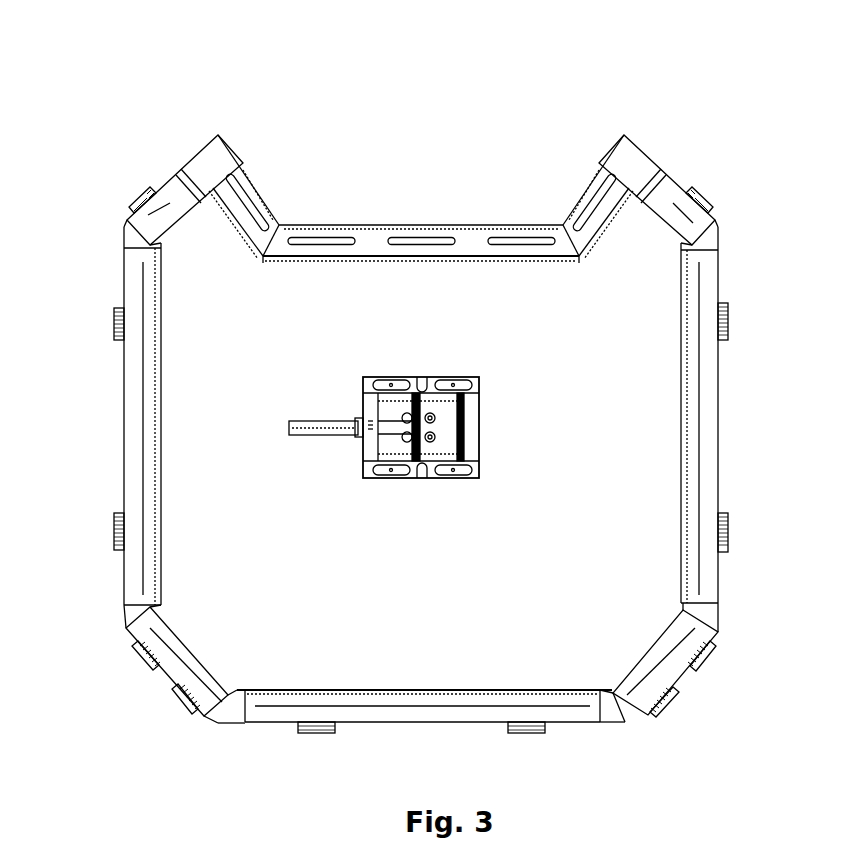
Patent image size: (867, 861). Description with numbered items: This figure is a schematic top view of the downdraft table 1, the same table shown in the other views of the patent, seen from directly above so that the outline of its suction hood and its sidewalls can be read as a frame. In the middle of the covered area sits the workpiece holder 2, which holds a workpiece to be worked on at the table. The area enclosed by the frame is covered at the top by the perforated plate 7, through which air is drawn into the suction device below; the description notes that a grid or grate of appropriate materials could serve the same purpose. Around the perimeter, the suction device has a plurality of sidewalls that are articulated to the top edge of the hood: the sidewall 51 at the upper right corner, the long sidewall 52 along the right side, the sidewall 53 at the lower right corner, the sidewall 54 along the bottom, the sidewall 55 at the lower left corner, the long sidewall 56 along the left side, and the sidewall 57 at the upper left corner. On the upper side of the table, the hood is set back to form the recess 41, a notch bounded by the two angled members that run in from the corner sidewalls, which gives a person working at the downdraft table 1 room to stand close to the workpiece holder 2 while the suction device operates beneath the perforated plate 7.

The downdraft table 1 is at (88, 78).
The workpiece holder 2 is at (480, 467).
The perforated plate 7 is at (557, 344).
The recess 41 is at (397, 225).
The sidewall 51 is at (712, 217).
The sidewall 52 is at (697, 390).
The sidewall 53 is at (652, 650).
The sidewall 54 is at (398, 692).
The sidewall 55 is at (197, 650).
The sidewall 56 is at (163, 472).
The sidewall 57 is at (180, 214).